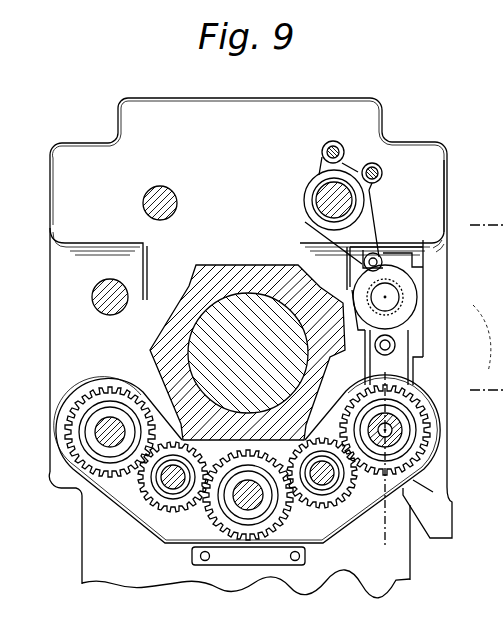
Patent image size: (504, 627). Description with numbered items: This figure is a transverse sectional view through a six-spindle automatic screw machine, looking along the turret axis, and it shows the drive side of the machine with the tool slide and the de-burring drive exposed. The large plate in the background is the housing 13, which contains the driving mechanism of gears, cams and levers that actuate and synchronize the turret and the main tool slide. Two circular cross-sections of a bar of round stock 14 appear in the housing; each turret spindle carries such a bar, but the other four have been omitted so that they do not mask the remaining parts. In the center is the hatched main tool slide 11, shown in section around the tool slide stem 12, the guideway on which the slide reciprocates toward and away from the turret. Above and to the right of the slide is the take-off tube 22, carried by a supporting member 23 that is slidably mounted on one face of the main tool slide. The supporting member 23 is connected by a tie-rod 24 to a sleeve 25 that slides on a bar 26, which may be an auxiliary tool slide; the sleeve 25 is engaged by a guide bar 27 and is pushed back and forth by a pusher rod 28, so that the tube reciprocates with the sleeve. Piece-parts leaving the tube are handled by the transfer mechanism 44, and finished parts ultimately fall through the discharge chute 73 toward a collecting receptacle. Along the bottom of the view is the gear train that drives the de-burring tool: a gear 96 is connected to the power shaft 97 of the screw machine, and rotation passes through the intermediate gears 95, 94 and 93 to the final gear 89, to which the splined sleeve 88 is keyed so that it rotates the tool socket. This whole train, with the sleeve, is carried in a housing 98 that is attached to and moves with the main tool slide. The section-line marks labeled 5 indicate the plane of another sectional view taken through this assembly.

The housing 13 is at (60, 184).
The bar of round stock 14 is at (143, 205).
The main tool slide 11 is at (200, 271).
The tool slide stem 12 is at (205, 322).
The sleeve 25 is at (315, 188).
The bar 26 is at (313, 219).
The pusher rod 28 is at (326, 150).
The guide bar 27 is at (381, 175).
The tie-rod 24 is at (375, 257).
The supporting member 23 is at (415, 271).
The take-off tube 22 is at (409, 293).
The transfer mechanism 44 is at (429, 371).
The sleeve 88 is at (400, 426).
The gear 89 is at (430, 433).
The discharge chute 73 is at (452, 512).
The gear 96 is at (72, 433).
The power shaft 97 is at (100, 452).
The gear 95 is at (147, 503).
The gear 94 is at (212, 529).
The gear 93 is at (325, 506).
The housing 98 is at (343, 525).
The section line 5 is at (372, 370).